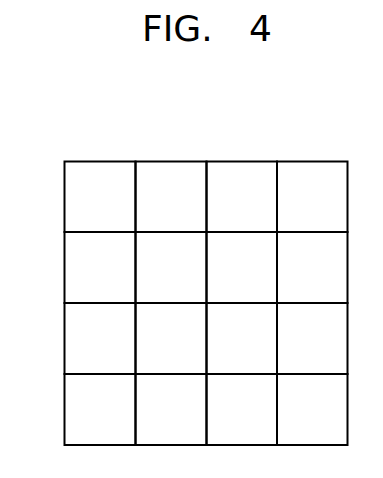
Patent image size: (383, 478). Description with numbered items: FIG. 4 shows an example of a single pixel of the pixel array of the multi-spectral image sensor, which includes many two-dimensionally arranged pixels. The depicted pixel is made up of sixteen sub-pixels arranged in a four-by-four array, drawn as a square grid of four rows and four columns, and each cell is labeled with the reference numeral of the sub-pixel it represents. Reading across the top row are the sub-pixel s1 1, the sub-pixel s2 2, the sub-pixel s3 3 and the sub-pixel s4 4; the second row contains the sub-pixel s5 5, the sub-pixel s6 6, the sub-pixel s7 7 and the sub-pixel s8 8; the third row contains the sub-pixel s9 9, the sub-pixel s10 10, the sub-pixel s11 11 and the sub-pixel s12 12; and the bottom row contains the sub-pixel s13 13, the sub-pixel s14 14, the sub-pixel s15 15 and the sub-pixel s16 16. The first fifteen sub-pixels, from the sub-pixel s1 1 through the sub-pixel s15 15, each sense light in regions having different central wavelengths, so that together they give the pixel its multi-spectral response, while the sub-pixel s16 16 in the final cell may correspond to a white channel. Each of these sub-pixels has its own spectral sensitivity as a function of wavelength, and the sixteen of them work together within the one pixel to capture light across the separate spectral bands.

The sub-pixel s1 1 is at (100, 197).
The sub-pixel s2 2 is at (171, 197).
The sub-pixel s3 3 is at (242, 197).
The sub-pixel s4 4 is at (312, 197).
The sub-pixel s5 5 is at (100, 267).
The sub-pixel s6 6 is at (171, 267).
The sub-pixel s7 7 is at (242, 267).
The sub-pixel s8 8 is at (312, 267).
The sub-pixel s9 9 is at (100, 338).
The sub-pixel s10 10 is at (171, 338).
The sub-pixel s11 11 is at (242, 338).
The sub-pixel s12 12 is at (312, 338).
The sub-pixel s13 13 is at (100, 409).
The sub-pixel s14 14 is at (171, 409).
The sub-pixel s15 15 is at (242, 409).
The sub-pixel s16 16 is at (312, 409).